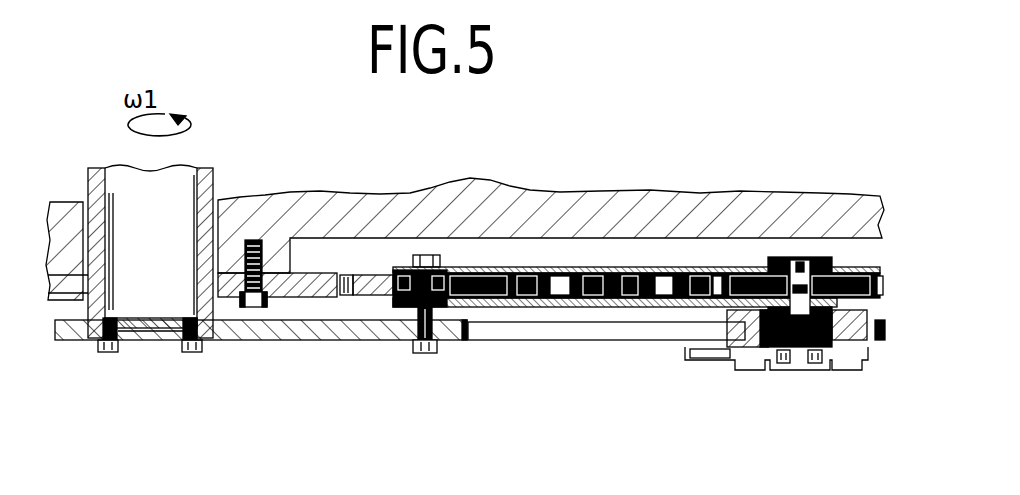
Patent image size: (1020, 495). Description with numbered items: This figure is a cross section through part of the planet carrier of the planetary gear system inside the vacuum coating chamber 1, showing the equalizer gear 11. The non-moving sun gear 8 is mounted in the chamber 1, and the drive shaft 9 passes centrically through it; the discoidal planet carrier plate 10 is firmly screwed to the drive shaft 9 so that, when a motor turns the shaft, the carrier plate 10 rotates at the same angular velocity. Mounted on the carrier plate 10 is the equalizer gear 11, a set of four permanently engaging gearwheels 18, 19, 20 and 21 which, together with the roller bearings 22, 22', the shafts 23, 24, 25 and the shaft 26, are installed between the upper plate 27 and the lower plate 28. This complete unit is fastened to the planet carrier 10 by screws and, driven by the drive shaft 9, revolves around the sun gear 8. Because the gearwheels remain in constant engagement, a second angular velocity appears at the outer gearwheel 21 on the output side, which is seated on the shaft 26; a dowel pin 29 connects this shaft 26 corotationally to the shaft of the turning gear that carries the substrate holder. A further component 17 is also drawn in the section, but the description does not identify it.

The vacuum coating chamber 1 is at (543, 193).
The sun gear 8 is at (315, 275).
The drive shaft 9 is at (214, 172).
The planet carrier plate 10 is at (268, 342).
The equalizer gear 11 is at (780, 384).
The carrier plate 17 is at (587, 335).
The gearwheel 18 is at (368, 300).
The gearwheel 19 is at (522, 305).
The gearwheel 20 is at (622, 305).
The outer gearwheel 21 is at (728, 312).
The roller bearing 22 is at (415, 232).
The roller bearing 22' is at (508, 224).
The shaft 23 is at (415, 310).
The shaft 24 is at (565, 305).
The shaft 25 is at (668, 305).
The shaft 26 is at (796, 258).
The upper plate 27 is at (843, 270).
The lower plate 28 is at (878, 343).
The dowel pin 29 is at (800, 355).